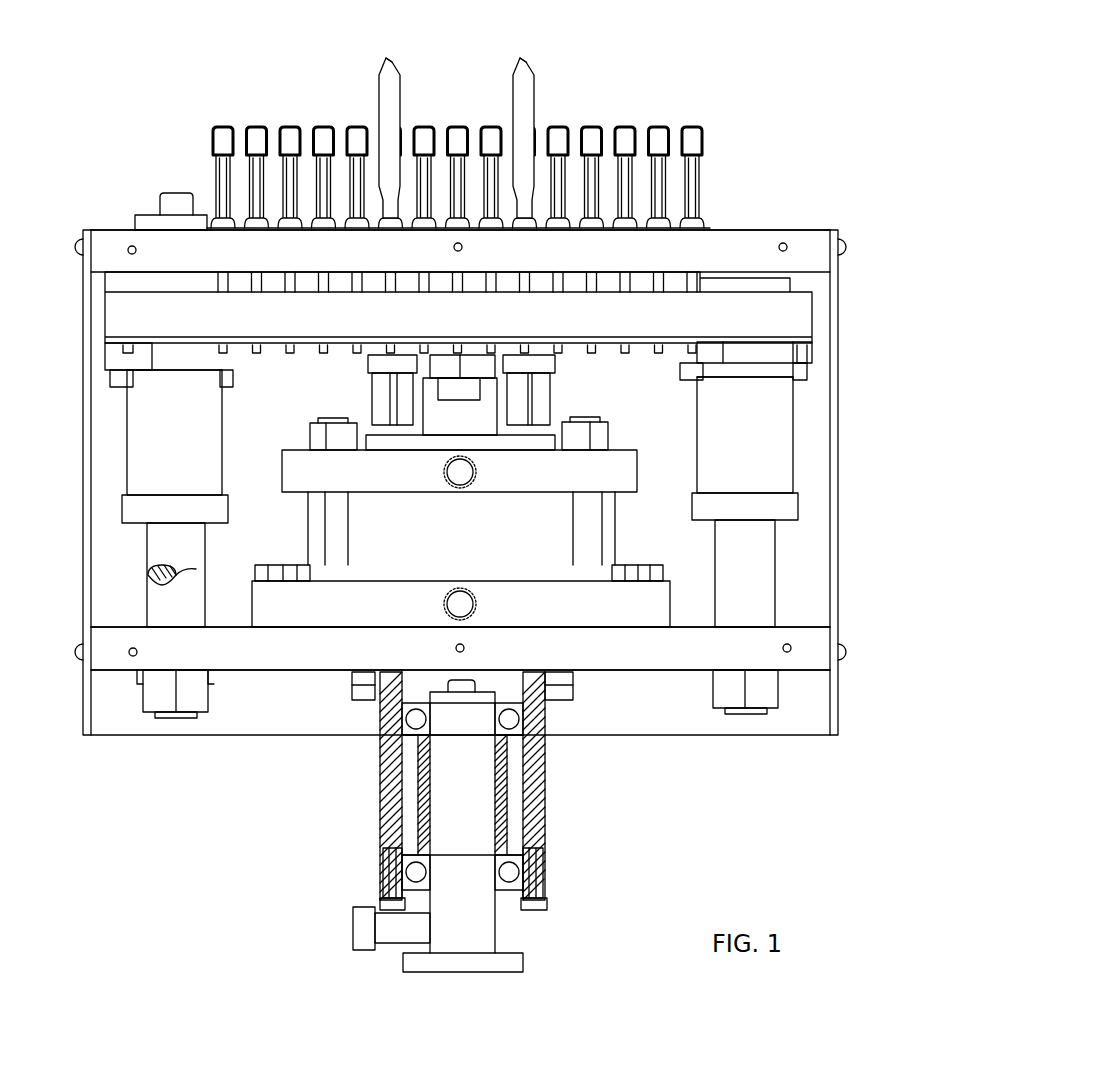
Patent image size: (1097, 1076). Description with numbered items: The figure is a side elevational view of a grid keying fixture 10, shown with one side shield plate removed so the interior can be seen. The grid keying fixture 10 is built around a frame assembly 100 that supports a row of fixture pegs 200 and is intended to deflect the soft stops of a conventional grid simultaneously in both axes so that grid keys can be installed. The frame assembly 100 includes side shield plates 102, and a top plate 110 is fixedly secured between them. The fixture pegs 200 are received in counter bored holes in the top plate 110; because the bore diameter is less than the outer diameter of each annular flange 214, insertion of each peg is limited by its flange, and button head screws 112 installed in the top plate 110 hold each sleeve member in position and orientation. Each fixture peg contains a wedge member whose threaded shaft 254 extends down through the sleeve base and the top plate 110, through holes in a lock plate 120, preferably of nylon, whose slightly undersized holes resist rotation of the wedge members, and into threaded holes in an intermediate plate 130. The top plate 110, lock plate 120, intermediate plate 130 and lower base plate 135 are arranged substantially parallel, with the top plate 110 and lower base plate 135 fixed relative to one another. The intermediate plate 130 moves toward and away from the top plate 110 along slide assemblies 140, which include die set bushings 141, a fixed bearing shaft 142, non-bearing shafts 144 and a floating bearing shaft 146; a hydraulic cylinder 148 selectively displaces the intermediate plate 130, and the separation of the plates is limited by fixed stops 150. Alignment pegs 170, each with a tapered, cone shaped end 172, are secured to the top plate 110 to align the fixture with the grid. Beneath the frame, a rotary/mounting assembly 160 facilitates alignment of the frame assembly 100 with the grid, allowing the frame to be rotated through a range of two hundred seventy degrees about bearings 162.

The grid keying fixture 10 is at (657, 70).
The frame assembly 100 is at (784, 208).
The side shield plates 102 is at (85, 720).
The top plate 110 is at (118, 228).
The button head screws 112 is at (240, 222).
The lock plate 120 is at (272, 340).
The intermediate plate 130 is at (578, 320).
The lower base plate 135 is at (646, 663).
The slide assemblies 140 is at (800, 440).
The die set bushings 141 is at (220, 422).
The fixed bearing shaft 142 is at (765, 567).
The non-bearing shafts 144 is at (200, 600).
The floating bearing shaft 146 is at (196, 545).
The hydraulic cylinder 148 is at (678, 438).
The fixed stops 150 is at (405, 415).
The rotary/mounting assembly 160 is at (556, 840).
The bearings 162 is at (520, 720).
The alignment pegs 170 is at (368, 72).
The cone shaped end 172 is at (395, 60).
The fixture pegs 200 is at (286, 118).
The annular flange 214 is at (360, 229).
The shaft 254 is at (690, 272).